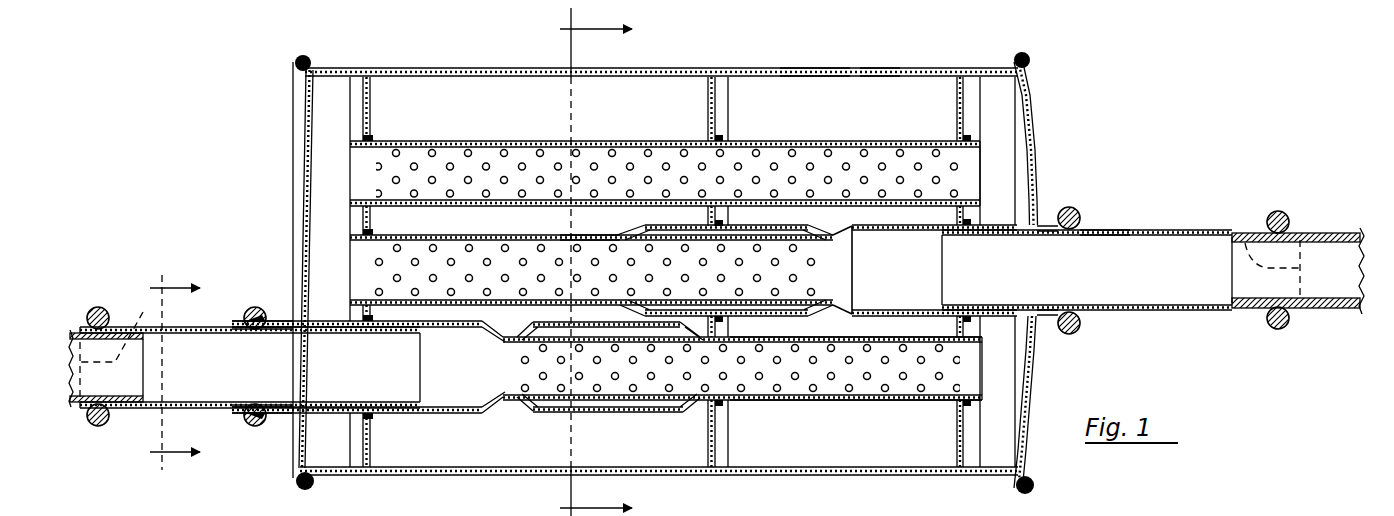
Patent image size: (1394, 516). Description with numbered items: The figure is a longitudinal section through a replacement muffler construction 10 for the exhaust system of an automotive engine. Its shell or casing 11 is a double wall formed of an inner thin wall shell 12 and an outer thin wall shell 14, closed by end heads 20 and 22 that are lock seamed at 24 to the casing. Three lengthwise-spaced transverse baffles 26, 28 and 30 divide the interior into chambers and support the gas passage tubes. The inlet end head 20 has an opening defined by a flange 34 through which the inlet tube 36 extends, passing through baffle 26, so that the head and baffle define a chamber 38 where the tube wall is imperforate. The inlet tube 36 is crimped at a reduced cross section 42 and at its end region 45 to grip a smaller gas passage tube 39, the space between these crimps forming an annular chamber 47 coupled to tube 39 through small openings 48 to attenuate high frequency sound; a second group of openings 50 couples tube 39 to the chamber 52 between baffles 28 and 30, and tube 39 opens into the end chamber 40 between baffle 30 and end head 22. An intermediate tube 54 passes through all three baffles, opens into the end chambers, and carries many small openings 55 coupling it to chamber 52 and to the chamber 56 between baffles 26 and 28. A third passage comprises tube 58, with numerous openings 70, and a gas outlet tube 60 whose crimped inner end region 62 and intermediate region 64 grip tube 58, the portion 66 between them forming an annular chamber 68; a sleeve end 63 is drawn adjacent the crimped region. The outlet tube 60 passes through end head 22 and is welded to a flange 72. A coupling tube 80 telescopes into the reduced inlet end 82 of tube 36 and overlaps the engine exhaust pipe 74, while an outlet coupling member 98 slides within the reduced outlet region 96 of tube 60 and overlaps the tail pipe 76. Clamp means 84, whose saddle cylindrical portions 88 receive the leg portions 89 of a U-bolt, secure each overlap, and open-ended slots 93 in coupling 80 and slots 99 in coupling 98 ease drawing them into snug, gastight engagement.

The muffler construction 10 is at (912, 60).
The shell or casing 11 is at (828, 66).
The inner thin wall layer or shell 12 is at (853, 78).
The outer thin wall layer or shell 14 is at (882, 70).
The end head 20 is at (300, 110).
The end head 22 is at (1032, 112).
The lock seam 24 is at (1015, 60).
The baffle 26 is at (373, 92).
The baffle 28 is at (703, 90).
The baffle 30 is at (957, 95).
The flange 34 is at (292, 418).
The inlet gas passage means or tube 36 is at (395, 415).
The transverse gas passage or chamber 38 is at (337, 131).
The gas passage means or tube 39 is at (856, 396).
The transverse gas passage or chamber 40 is at (1006, 113).
The reduced cross section 42 is at (500, 408).
The end region 45 is at (700, 408).
The annular chamber 47 is at (593, 400).
The small openings or passages 48 is at (732, 396).
The small openings or passages 50 is at (805, 383).
The chamber 52 is at (821, 108).
The intermediate gas passage means or tube 54 is at (665, 154).
The small openings or outlets 55 is at (820, 157).
The chamber 56 is at (544, 108).
The gas passage tube 58 is at (623, 255).
The gas outlet tube 60 is at (922, 216).
The inner end region 62 is at (600, 237).
The sleeve end 63 is at (662, 228).
The intermediate region 64 is at (835, 232).
The portion of the outlet tube 66 is at (780, 226).
The annular chamber 68 is at (726, 308).
The small outlets or openings 70 is at (795, 278).
The flange 72 is at (1068, 206).
The engine exhaust pipe 74 is at (75, 330).
The tail pipe 76 is at (1327, 232).
The coupling member, adapter or tube 80 is at (152, 410).
The inlet end 82 is at (277, 323).
The clamp means 84 is at (110, 305).
The cylindrical portions 88 is at (243, 416).
The leg portions 89 is at (258, 432).
The open-ended slots 93 is at (150, 302).
The outlet region 96 is at (1120, 230).
The tubular outlet coupling or member 98 is at (1140, 230).
The slots 99 is at (1242, 240).